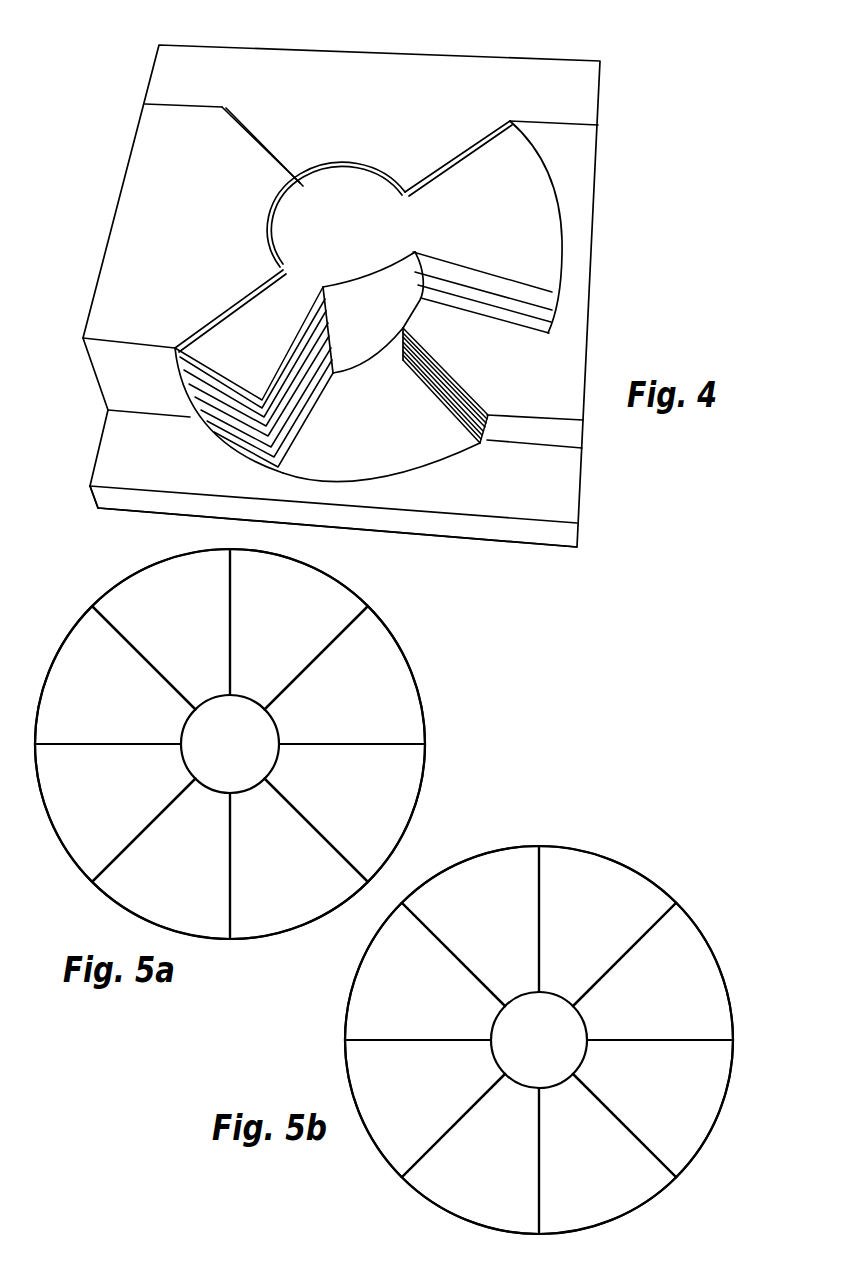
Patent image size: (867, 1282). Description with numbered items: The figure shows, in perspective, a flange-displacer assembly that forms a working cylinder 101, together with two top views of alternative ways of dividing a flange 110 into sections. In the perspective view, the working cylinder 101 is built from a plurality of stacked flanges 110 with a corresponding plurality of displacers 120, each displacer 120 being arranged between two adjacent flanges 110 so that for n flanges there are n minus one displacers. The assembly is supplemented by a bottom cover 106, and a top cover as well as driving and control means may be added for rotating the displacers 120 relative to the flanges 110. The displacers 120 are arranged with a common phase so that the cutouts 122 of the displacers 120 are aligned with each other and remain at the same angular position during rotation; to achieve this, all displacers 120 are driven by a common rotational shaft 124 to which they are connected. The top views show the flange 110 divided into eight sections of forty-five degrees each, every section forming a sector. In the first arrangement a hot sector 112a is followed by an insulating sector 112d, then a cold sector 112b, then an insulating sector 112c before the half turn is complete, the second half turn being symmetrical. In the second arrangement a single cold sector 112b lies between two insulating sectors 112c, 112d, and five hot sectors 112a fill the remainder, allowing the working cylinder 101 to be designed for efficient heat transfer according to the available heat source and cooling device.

In FIG. 4, the working cylinder 101 is at (623, 237).
In FIG. 4, the bottom cover 106 is at (543, 508).
In FIG. 4, the flange 110 is at (473, 382).
In FIG. 5A, the flange 110 is at (262, 940).
In FIG. 5B, the flange 110 is at (556, 843).
In FIG. 5A, the hot sector 112a is at (257, 632).
In FIG. 5B, the hot sector 112a is at (563, 941).
In FIG. 5A, the cold sector 112b is at (326, 812).
In FIG. 5B, the cold sector 112b is at (643, 1101).
In FIG. 5A, the insulating sector 112c is at (257, 887).
In FIG. 5B, the insulating sector 112c is at (634, 1010).
In FIG. 5A, the insulating sector 112d is at (331, 707).
In FIG. 5B, the insulating sector 112d is at (574, 1180).
In FIG. 4, the displacer 120 is at (475, 209).
In FIG. 4, the cutout 122 is at (382, 418).
In FIG. 4, the common rotational shaft 124 is at (347, 210).